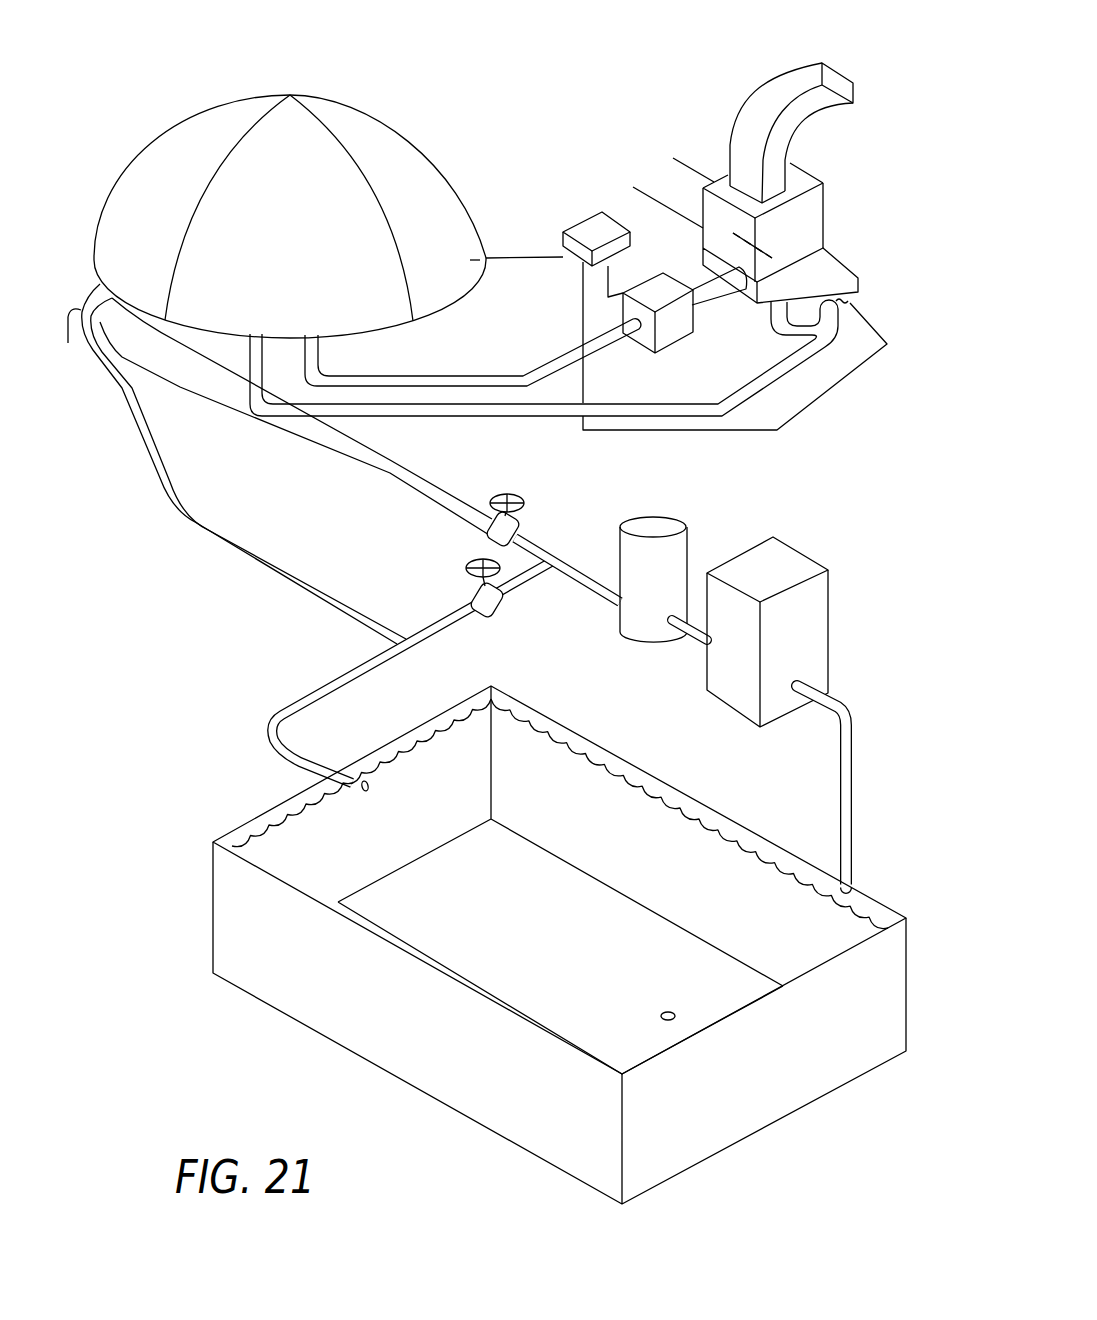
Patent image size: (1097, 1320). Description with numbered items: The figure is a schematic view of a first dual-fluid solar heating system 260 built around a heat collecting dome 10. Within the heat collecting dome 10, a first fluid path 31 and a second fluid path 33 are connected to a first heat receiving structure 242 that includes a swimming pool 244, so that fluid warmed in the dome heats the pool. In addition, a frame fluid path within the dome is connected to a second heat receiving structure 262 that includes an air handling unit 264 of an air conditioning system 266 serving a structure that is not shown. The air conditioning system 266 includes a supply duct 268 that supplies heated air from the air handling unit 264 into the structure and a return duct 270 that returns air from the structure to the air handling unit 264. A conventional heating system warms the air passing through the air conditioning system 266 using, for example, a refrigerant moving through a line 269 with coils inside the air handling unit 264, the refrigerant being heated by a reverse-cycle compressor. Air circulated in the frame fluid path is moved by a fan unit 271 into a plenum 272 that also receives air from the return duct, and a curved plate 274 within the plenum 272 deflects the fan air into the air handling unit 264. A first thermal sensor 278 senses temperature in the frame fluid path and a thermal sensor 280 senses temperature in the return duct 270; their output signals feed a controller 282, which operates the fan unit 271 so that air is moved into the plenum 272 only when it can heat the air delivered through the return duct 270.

The heat collecting dome 10 is at (391, 119).
The first fluid path 31 is at (104, 322).
The second fluid path 33 is at (229, 464).
The first heat receiving structure 242 is at (226, 772).
The swimming pool 244 is at (643, 764).
The first dual-fluid solar heating system 260 is at (172, 618).
The second heat receiving structure 262 is at (860, 404).
The air handling unit 264 is at (823, 183).
The air conditioning system 266 is at (703, 139).
The supply duct 268 is at (847, 107).
The line 269 is at (672, 177).
The return duct 270 is at (845, 257).
The fan unit 271 is at (668, 273).
The plenum 272 is at (730, 293).
The curved plate 274 is at (772, 258).
The first thermal sensor 278 is at (474, 260).
The thermal sensor 280 is at (862, 298).
The controller 282 is at (578, 213).